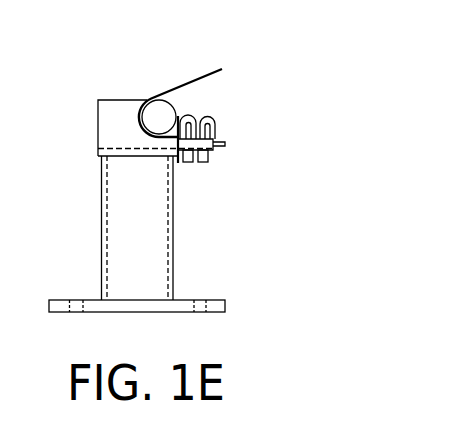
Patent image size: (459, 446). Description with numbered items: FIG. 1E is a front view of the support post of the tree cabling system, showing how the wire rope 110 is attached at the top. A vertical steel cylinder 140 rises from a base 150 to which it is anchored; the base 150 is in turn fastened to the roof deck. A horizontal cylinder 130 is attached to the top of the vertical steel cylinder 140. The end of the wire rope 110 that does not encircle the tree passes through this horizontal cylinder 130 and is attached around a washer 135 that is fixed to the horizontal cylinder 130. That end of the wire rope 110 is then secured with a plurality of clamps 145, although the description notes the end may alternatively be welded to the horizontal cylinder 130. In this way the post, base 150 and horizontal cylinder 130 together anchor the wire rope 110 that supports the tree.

The wire rope 110 is at (222, 69).
The horizontal cylinder 130 is at (166, 110).
The washer 135 is at (183, 117).
The vertical steel cylinder 140 is at (173, 213).
The clamps 145 is at (210, 152).
The base 150 is at (212, 300).